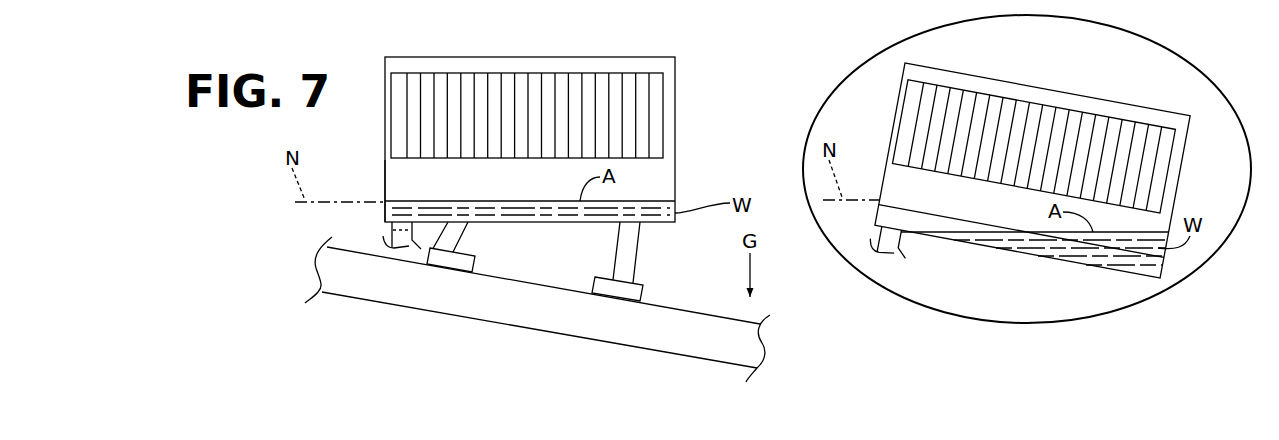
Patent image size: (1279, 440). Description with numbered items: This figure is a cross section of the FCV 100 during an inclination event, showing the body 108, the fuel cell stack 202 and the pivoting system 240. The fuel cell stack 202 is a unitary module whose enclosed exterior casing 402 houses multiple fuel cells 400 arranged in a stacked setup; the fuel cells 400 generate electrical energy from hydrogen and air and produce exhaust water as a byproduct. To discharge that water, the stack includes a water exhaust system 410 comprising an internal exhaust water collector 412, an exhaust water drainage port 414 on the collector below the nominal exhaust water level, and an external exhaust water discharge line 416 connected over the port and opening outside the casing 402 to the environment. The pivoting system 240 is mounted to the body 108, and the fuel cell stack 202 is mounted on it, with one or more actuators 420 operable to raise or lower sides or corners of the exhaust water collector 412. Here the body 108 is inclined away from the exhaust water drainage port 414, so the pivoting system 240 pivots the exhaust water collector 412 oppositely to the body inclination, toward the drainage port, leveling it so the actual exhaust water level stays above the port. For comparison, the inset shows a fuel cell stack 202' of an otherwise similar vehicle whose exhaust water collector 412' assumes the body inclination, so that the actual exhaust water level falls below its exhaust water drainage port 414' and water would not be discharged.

The FCV 100 is at (627, 40).
The fuel cell stack 202 is at (563, 125).
The fuel cells 400 is at (590, 143).
The casing 402 is at (677, 182).
The water exhaust system 410 is at (397, 172).
The exhaust water collector 412 is at (530, 182).
The exhaust water drainage port 414 is at (426, 206).
The exhaust water discharge line 416 is at (386, 238).
The actuators 420 is at (610, 242).
The pivoting system 240 is at (485, 262).
The body 108 is at (665, 333).
The fuel cell stack 202' is at (1032, 167).
The exhaust water collector 412' is at (1021, 227).
The exhaust water drainage port 414' is at (913, 221).